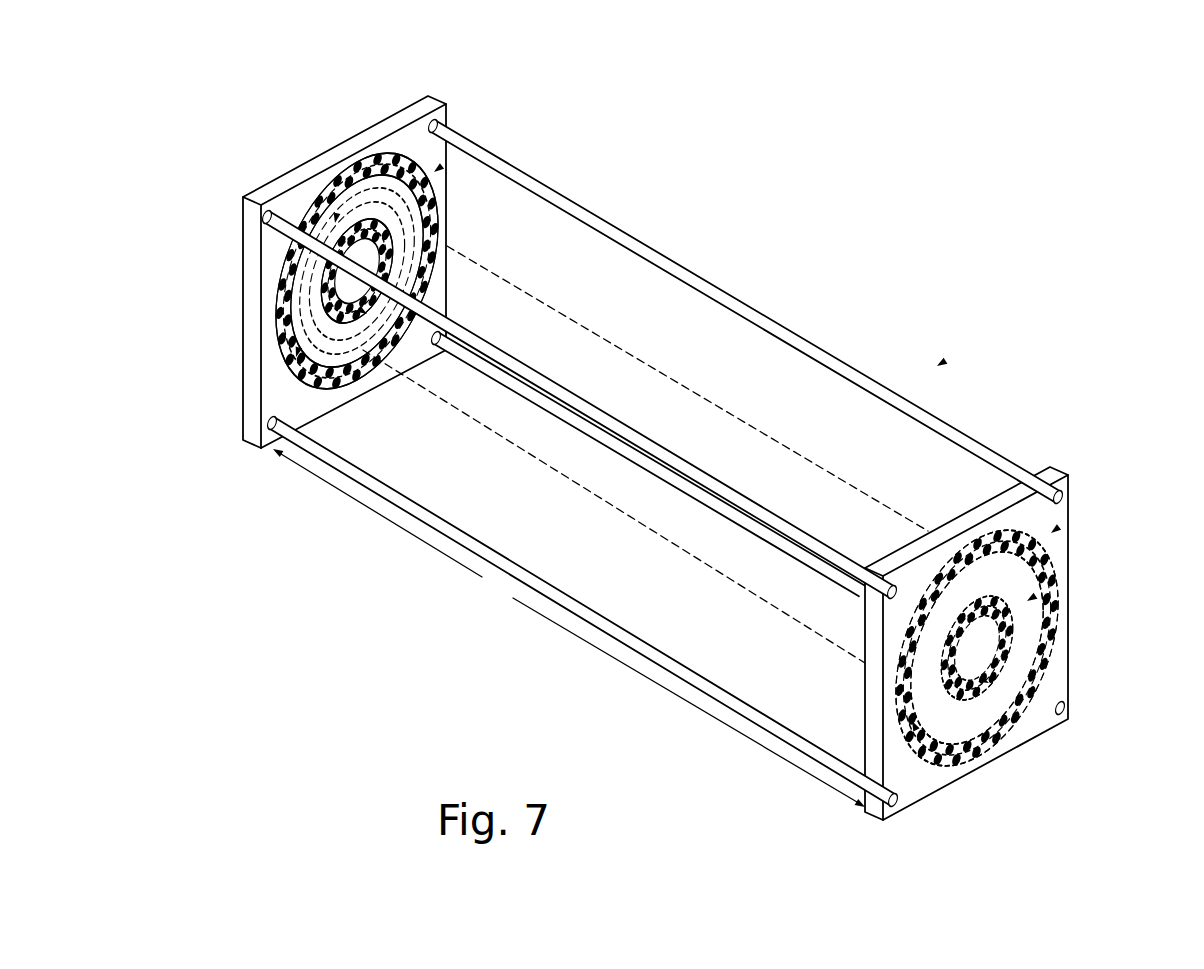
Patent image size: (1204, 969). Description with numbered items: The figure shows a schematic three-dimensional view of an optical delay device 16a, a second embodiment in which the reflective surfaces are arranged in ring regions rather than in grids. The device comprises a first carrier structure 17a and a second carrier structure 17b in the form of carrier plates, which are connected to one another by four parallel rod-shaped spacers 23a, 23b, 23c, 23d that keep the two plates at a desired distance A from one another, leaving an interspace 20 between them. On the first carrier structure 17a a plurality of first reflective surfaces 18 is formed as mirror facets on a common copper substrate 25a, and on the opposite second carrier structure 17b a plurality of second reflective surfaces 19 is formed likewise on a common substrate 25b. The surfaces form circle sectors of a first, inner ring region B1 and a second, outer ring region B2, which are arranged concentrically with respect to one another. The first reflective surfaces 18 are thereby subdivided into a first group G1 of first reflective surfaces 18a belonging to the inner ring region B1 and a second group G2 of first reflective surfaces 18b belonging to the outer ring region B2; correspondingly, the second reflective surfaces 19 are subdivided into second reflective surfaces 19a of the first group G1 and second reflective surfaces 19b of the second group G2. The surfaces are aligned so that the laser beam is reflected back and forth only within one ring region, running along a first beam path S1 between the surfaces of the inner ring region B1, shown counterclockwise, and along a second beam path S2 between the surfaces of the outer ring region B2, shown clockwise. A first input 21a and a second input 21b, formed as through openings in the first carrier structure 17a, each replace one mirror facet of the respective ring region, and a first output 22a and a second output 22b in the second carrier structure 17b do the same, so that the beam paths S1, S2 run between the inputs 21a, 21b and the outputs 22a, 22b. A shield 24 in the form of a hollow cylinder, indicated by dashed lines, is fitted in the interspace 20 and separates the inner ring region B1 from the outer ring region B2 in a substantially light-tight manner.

The optical delay device 16a is at (945, 360).
The first carrier structure 17a is at (270, 246).
The second carrier structure 17b is at (1065, 680).
The first reflective surfaces 18 is at (613, 400).
The first reflective surfaces of the first group 18a is at (355, 222).
The first reflective surfaces of the second group 18b is at (400, 172).
The second reflective surfaces 19 is at (986, 589).
The second reflective surfaces of the first group 19a is at (988, 583).
The second reflective surfaces of the second group 19b is at (1022, 540).
The interspace 20 is at (686, 524).
The first input 21a is at (285, 324).
The second input 21b is at (392, 250).
The first output 22a is at (900, 690).
The second output 22b is at (1063, 606).
The rod-shaped spacer 23a is at (714, 291).
The rod-shaped spacer 23b is at (648, 456).
The rod-shaped spacer 23c is at (430, 522).
The rod-shaped spacer 23d is at (548, 390).
The shield 24 is at (585, 326).
The substrate 25a is at (438, 268).
The substrate 25b is at (1063, 637).
The distance A is at (569, 628).
The first ring region B1 is at (707, 360).
The first group G1 is at (337, 212).
The second ring region B2 is at (807, 321).
The second group G2 is at (442, 166).
The first beam path S1 is at (322, 277).
The second beam path S2 is at (298, 348).